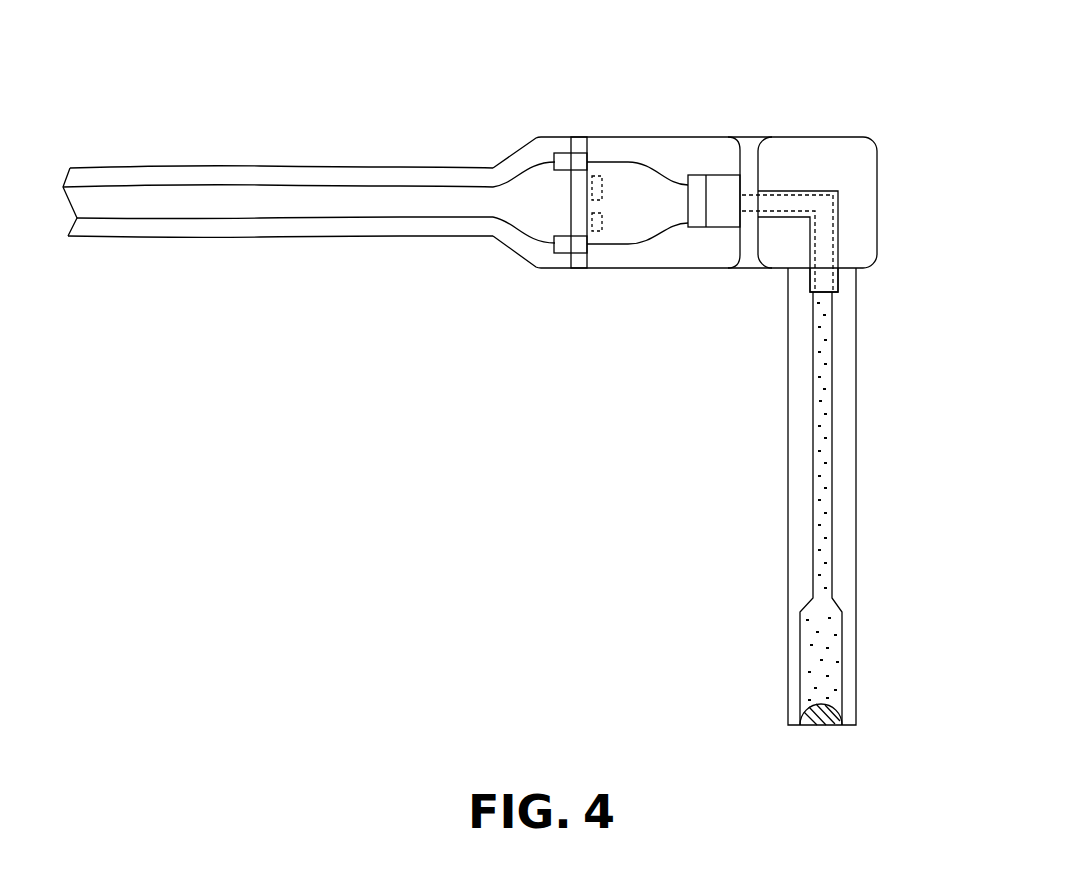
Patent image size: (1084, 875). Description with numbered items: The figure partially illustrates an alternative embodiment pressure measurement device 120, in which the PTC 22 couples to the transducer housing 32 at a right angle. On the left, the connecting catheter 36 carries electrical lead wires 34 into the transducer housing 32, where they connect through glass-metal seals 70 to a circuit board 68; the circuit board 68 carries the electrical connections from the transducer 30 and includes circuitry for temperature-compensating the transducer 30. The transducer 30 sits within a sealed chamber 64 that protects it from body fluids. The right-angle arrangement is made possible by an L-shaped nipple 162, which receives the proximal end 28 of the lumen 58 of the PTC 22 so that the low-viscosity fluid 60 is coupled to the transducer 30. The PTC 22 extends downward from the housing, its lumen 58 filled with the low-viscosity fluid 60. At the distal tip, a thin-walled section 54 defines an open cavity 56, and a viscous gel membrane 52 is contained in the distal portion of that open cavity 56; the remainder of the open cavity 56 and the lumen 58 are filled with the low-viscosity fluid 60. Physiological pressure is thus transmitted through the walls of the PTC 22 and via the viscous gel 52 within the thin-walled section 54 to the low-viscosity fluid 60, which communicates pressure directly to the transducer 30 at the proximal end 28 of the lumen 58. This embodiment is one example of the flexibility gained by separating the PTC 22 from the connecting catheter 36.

The pressure measurement device 120 is at (449, 80).
The connecting catheter 36 is at (355, 167).
The electrical lead wires 34 is at (440, 218).
The transducer housing 32 is at (699, 110).
The glass-metal seals 70 is at (563, 152).
The circuit board 68 is at (578, 262).
The transducer 30 is at (720, 230).
The sealed chamber 64 is at (718, 151).
The nipple 162 is at (838, 286).
The proximal end 28 is at (834, 295).
The PTC 22 is at (762, 507).
The low-viscosity fluid 60 is at (821, 466).
The lumen 58 is at (832, 540).
The open cavity 56 is at (812, 668).
The thin-walled section 54 is at (856, 663).
The viscous gel membrane 52 is at (823, 727).